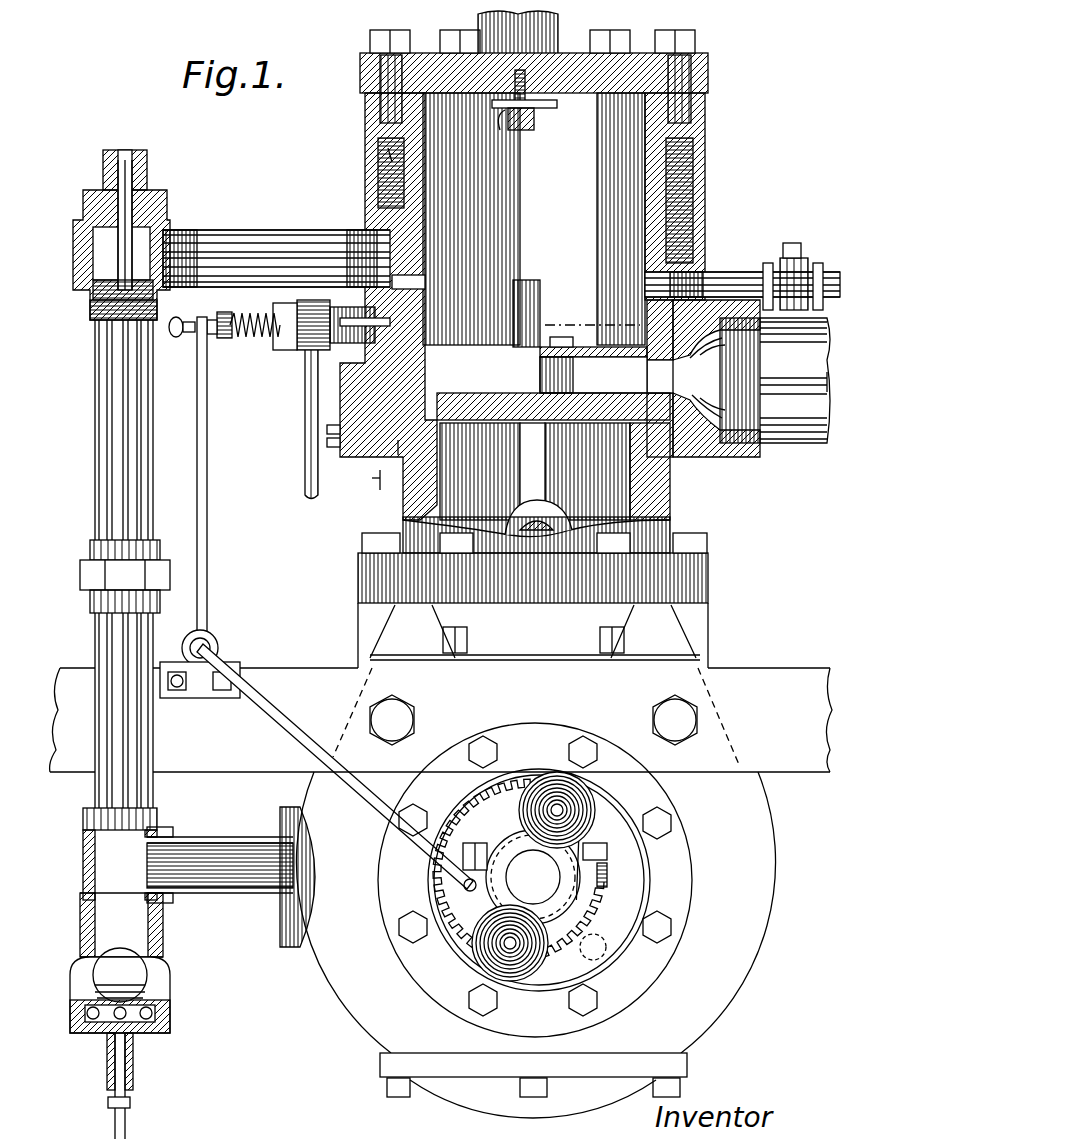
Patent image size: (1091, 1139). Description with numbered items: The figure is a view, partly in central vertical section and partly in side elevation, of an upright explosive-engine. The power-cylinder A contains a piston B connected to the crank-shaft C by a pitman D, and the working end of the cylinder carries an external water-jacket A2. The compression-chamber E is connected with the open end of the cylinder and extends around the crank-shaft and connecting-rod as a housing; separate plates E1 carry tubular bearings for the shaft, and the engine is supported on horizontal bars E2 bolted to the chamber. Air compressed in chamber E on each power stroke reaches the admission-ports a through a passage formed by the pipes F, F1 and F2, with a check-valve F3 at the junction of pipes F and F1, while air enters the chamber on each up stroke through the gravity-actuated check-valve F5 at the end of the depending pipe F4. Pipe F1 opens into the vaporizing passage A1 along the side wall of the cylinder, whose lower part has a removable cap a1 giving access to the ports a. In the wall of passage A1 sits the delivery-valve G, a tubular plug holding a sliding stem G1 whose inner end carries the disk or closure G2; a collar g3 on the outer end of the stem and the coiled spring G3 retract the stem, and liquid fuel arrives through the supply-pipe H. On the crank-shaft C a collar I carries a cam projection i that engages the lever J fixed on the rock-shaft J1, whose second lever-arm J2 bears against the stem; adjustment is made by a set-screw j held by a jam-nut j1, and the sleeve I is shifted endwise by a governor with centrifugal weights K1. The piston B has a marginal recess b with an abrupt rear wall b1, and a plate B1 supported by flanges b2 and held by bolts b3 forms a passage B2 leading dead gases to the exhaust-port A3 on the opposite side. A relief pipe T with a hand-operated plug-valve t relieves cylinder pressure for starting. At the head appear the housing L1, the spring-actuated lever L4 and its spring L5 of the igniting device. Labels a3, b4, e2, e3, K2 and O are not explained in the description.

The power-cylinder A is at (550, 286).
The vaporizing passage A1 is at (396, 283).
The external cylinder or jacket A2 is at (692, 178).
The exhaust-port A3 is at (658, 376).
The admission-ports a is at (372, 478).
The removable cap a1 is at (333, 450).
The port a3 is at (388, 152).
The piston B is at (536, 480).
The plate or wall B1 is at (588, 346).
The passage B2 is at (593, 375).
The marginal angular recess b is at (500, 358).
The rear wall of recess b1 is at (548, 377).
The flanges b2 is at (550, 384).
The bolts b3 is at (548, 342).
The outlet b4 is at (837, 381).
The crank-shaft C is at (533, 877).
The pitman D is at (556, 522).
The compression-chamber E is at (535, 945).
The separate plates E1 is at (430, 978).
The horizontal bars E2 is at (441, 644).
The guide blocks e2 is at (472, 845).
The guide block e3 is at (607, 882).
The pipe F is at (140, 441).
The pipe F1 is at (277, 240).
The branch pipe F2 is at (226, 842).
The check-valve F3 is at (90, 297).
The depending pipe F4 is at (163, 928).
The gravity-actuated check-valve F5 is at (125, 993).
The delivery-valve G is at (338, 332).
The sliding stem G1 is at (256, 345).
The disk or closure G2 is at (395, 323).
The coiled spring G3 is at (250, 318).
The collar g3 is at (218, 318).
The supply-pipe H is at (305, 441).
The collar I is at (568, 899).
The cam projection i is at (560, 940).
The lever J is at (297, 730).
The rock-shaft J1 is at (212, 650).
The second lever-arm J2 is at (205, 545).
The set-screw j is at (213, 336).
The jam-nut j1 is at (186, 334).
The centrifugal weights K1 is at (557, 810).
The pinion K2 is at (553, 945).
The housing L1 is at (518, 32).
The spring-actuated lever L4 is at (534, 115).
The spring L5 is at (505, 128).
The outlet pipe O is at (775, 380).
The relief pipe T is at (735, 272).
The plug-valve t is at (792, 265).